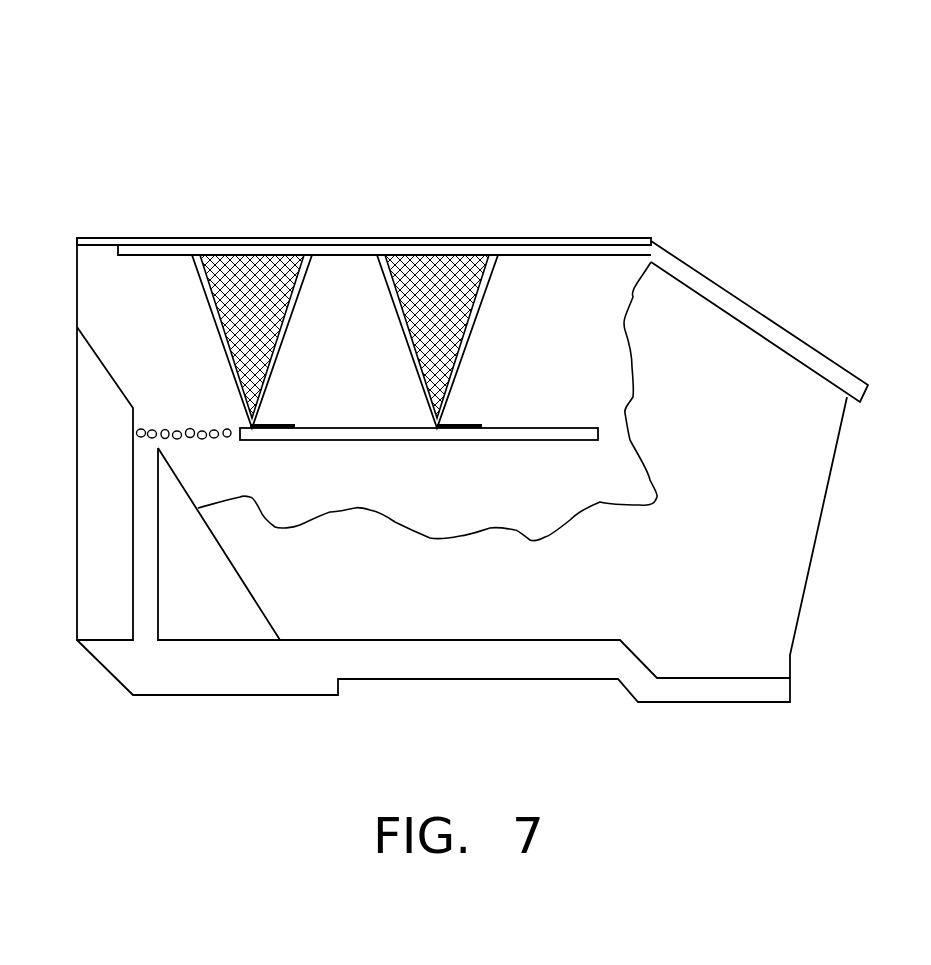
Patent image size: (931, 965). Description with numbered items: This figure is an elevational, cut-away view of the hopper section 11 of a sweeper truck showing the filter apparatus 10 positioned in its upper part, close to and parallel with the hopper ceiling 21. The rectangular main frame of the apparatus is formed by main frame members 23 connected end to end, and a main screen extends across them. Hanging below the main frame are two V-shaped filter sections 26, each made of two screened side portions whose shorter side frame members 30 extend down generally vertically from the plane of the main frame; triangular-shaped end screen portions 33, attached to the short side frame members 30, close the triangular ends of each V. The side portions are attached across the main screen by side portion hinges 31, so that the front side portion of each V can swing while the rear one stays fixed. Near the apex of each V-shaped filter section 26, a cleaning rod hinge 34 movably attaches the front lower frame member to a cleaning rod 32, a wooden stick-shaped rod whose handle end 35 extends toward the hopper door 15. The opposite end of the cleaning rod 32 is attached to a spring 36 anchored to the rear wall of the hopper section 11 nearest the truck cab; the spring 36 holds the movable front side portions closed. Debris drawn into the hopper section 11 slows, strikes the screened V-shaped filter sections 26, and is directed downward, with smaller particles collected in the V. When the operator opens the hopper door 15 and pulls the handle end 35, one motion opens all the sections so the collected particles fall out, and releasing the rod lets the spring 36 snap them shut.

The filter apparatus 10 is at (265, 107).
The hopper section 11 is at (728, 403).
The hopper door 15 is at (700, 268).
The hopper ceiling 21 is at (555, 238).
The main frame members 23 is at (175, 241).
The V-shaped filter section 26 is at (482, 352).
The shorter side frame members 30 is at (392, 310).
The side portion hinges 31 is at (290, 257).
The cleaning rod 32 is at (524, 417).
The triangular-shaped end screen portions 33 is at (393, 258).
The cleaning rod hinge 34 is at (268, 425).
The handle end 35 is at (563, 428).
The spring 36 is at (170, 426).